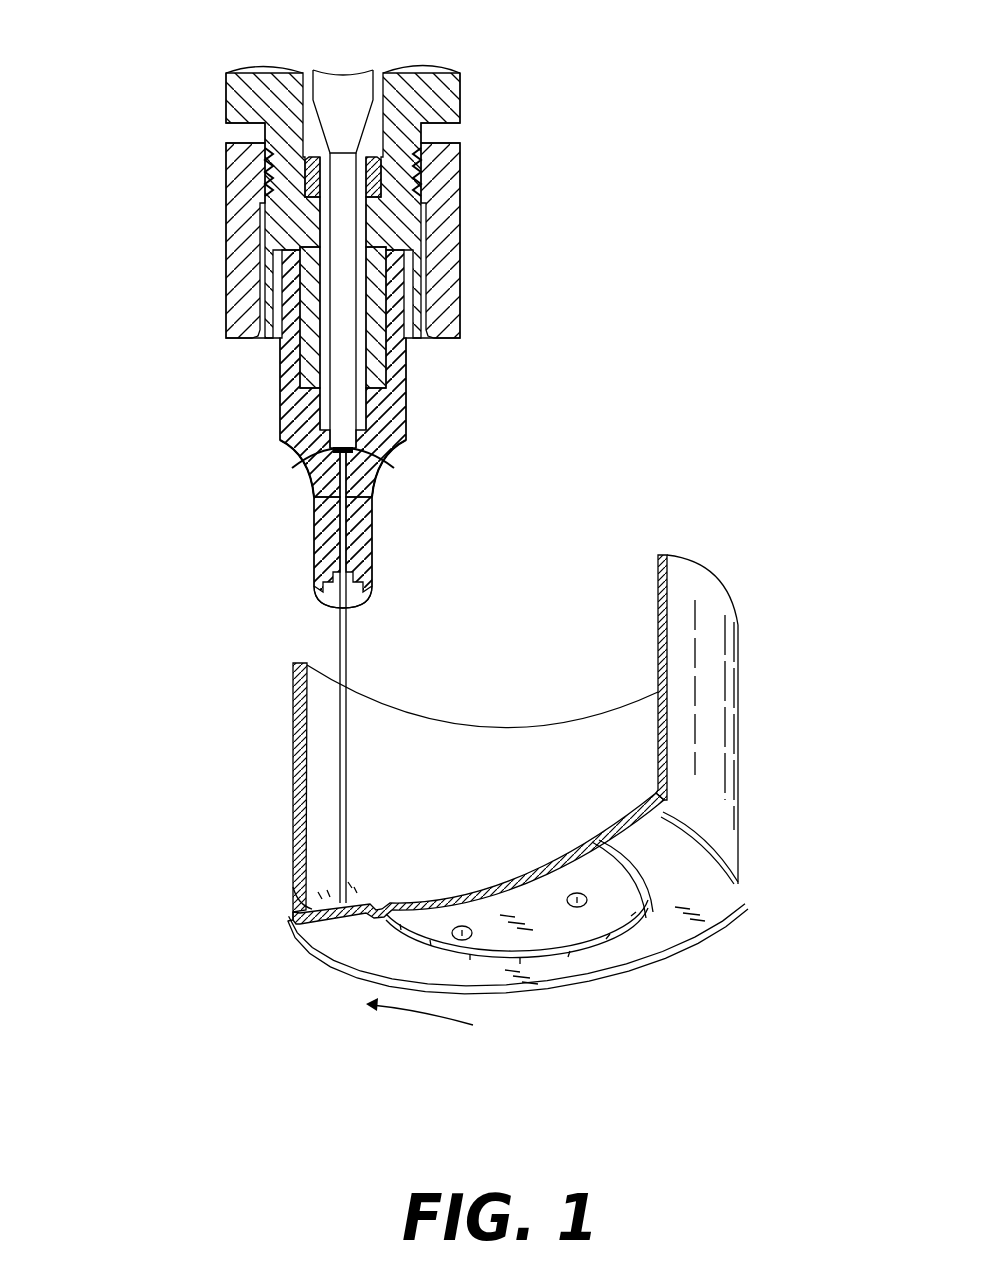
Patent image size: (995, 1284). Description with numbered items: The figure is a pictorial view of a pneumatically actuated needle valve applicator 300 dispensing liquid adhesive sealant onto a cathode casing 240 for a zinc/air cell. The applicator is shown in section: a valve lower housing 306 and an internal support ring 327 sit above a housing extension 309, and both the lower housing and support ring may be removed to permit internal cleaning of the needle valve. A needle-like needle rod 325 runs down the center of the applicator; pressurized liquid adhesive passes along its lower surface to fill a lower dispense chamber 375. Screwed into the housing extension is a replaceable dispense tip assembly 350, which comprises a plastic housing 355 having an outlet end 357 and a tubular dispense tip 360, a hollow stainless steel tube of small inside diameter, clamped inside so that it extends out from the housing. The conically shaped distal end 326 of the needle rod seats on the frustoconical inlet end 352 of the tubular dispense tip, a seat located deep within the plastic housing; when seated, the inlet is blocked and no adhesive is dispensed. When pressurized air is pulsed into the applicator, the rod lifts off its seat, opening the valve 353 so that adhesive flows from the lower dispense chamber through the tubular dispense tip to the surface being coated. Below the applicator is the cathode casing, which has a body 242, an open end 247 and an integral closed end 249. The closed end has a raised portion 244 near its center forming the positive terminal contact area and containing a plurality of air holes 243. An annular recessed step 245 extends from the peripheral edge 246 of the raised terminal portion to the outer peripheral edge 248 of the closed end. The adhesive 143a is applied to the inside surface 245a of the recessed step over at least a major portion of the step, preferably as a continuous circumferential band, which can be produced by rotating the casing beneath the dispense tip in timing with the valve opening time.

The needle valve applicator 300 is at (203, 68).
The valve lower housing 306 is at (460, 93).
The housing extension 309 is at (462, 232).
The internal support ring 327 is at (310, 178).
The needle rod 325 is at (357, 213).
The dispense tip assembly 350 is at (410, 360).
The lower dispense chamber 375 is at (372, 410).
The plastic housing 355 is at (280, 408).
The distal end of needle rod 326 is at (310, 487).
The outlet end 357 is at (377, 540).
The inlet end of tubular dispense tip 352 is at (348, 452).
The valve 353 is at (350, 455).
The tubular dispense tip 360 is at (347, 638).
The cathode casing 240 is at (293, 722).
The open end 247 is at (562, 730).
The body 242 is at (713, 687).
The adhesive 143a is at (372, 904).
The inside surface of recessed annular step 245a is at (637, 803).
The outer peripheral edge 248 is at (720, 847).
The recessed annular step 245 is at (703, 898).
The closed end 249 is at (355, 937).
The peripheral edge of raised terminal portion 246 is at (640, 900).
The air holes 243 is at (462, 940).
The raised portion 244 is at (570, 990).